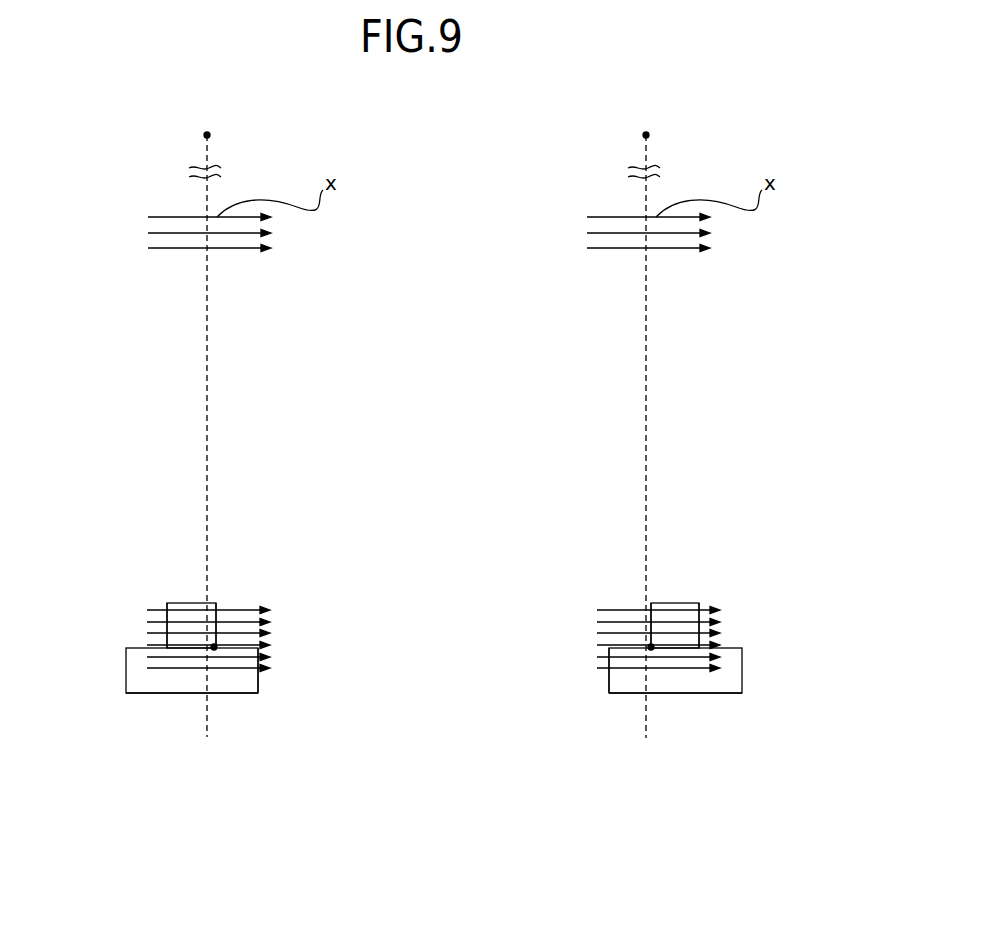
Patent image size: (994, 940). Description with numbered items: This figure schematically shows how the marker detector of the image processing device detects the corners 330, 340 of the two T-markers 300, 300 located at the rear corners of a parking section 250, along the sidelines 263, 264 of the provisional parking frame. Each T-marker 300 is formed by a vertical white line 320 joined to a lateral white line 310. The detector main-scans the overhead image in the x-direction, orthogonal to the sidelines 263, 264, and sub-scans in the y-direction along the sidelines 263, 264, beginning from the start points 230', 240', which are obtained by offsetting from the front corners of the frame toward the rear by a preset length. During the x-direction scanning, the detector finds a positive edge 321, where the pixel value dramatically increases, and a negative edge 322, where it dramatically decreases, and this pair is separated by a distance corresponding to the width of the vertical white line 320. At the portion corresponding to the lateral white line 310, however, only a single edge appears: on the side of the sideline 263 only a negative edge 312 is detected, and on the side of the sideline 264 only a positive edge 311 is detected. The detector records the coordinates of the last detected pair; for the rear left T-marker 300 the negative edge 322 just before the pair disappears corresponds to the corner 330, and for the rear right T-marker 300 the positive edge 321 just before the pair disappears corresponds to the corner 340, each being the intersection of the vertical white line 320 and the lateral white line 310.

The start point 230' is at (276, 132).
The start point 240' is at (715, 132).
The parking section 250 is at (470, 336).
The sideline 263 is at (207, 371).
The sideline 264 is at (646, 371).
The T-marker 300 is at (177, 695).
The lateral white line 310 is at (142, 682).
The positive edge 311 is at (608, 682).
The negative edge 312 is at (260, 680).
The vertical white line 320 is at (188, 603).
The positive edge 321 is at (167, 618).
The negative edge 322 is at (215, 615).
The corner 330 is at (214, 647).
The corner 340 is at (651, 647).